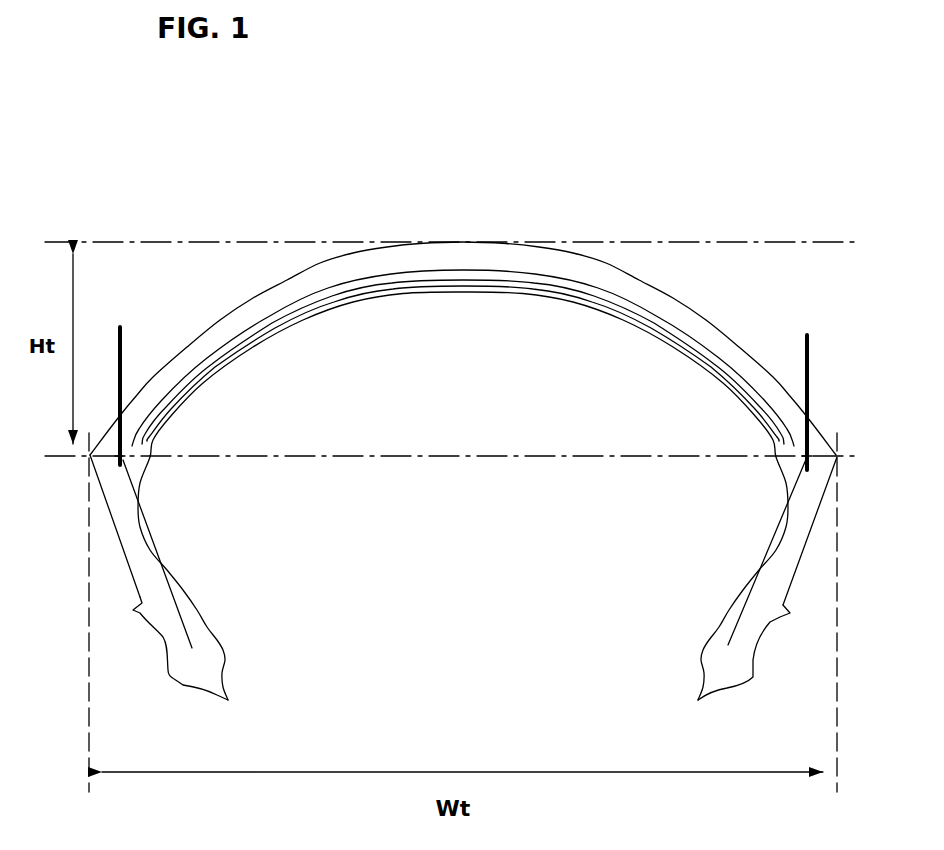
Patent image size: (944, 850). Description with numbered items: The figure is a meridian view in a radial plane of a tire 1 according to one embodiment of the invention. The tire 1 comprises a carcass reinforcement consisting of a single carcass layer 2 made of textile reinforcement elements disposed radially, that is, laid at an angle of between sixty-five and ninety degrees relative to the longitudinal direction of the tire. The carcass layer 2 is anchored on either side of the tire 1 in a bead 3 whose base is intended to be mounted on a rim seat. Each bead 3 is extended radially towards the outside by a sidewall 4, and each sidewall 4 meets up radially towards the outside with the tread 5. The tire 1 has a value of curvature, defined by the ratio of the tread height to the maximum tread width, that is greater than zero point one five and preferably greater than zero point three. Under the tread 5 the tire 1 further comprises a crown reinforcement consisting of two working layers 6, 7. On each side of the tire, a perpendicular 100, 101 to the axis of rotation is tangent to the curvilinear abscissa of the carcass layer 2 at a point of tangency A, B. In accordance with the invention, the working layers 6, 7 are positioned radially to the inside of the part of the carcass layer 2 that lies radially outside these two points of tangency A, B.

The tire 1 is at (578, 205).
The carcass layer 2 is at (165, 574).
The bead 3 is at (203, 647).
The sidewall 4 is at (128, 557).
The tread 5 is at (328, 258).
The working layer 6 is at (607, 300).
The working layer 7 is at (680, 333).
The perpendicular to the axis of rotation 100 is at (122, 347).
The perpendicular to the axis of rotation 101 is at (808, 357).
The point of tangency A is at (117, 449).
The point of tangency B is at (810, 452).